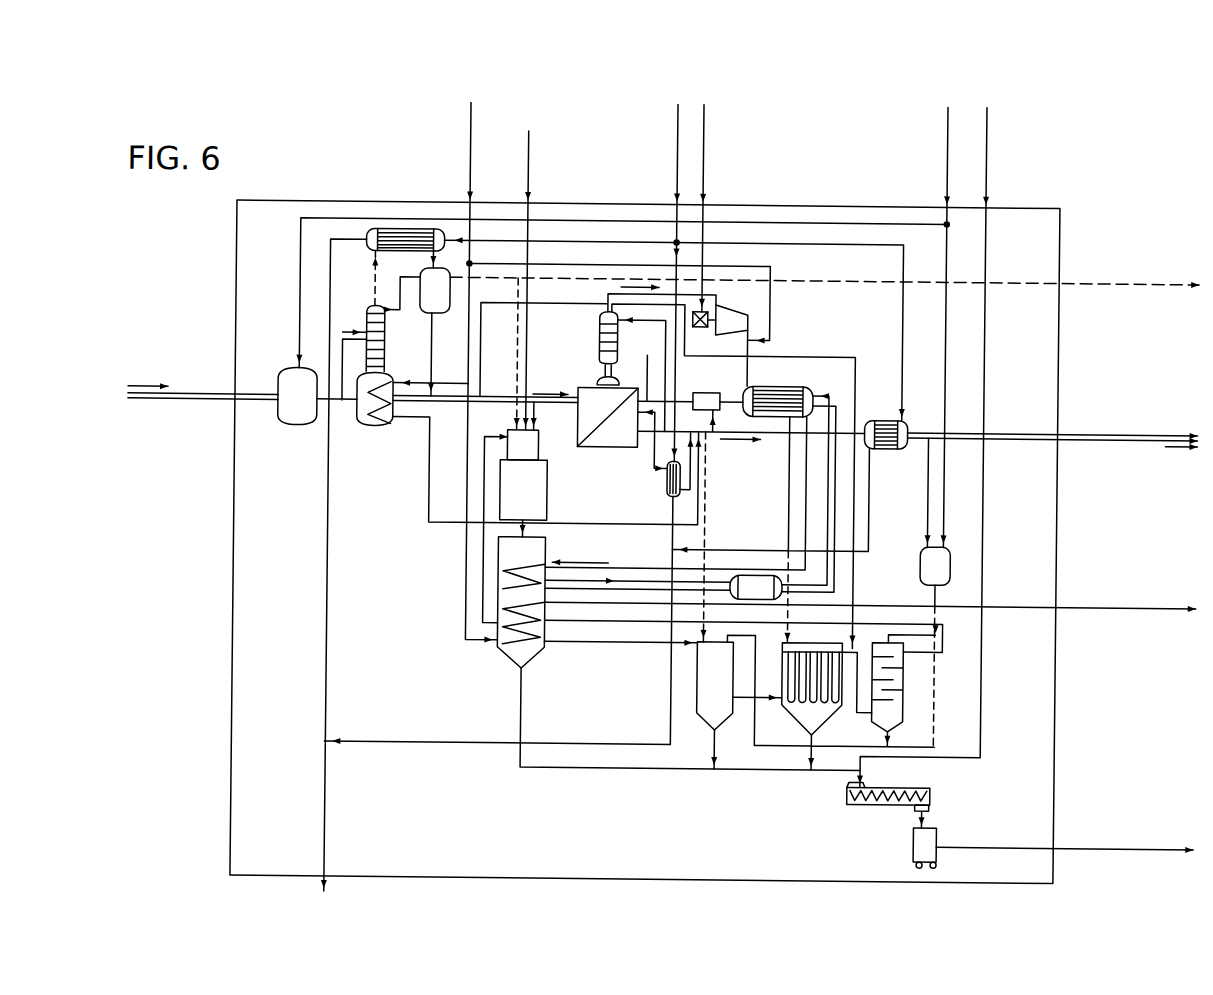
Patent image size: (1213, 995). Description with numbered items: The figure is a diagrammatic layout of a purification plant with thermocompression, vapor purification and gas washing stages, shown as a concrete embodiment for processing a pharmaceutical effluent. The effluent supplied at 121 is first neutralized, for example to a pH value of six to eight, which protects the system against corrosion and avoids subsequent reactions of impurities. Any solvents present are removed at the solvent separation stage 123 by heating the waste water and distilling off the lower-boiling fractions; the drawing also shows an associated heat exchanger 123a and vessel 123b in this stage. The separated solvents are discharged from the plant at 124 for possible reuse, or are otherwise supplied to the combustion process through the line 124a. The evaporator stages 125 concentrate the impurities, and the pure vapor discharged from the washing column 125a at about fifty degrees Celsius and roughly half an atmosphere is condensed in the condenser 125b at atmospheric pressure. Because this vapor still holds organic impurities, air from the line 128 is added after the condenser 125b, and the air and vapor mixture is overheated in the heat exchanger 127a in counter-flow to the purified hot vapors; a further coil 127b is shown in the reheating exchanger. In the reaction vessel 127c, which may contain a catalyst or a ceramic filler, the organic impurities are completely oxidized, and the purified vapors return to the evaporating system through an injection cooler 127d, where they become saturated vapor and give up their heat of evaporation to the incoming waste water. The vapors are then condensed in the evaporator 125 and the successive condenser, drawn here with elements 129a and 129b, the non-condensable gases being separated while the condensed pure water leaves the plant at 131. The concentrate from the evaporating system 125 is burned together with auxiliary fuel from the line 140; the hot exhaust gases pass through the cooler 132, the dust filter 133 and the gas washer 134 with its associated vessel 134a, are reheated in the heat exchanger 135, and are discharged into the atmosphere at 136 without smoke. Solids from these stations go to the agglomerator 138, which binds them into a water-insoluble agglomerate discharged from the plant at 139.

The effluent supply 121 is at (297, 425).
The solvent separation stage 123 is at (380, 425).
The heat exchanger 123a is at (404, 227).
The separator vessel 123b is at (428, 308).
The solvent discharge 124 is at (1093, 278).
The solvent line to combustion 124a is at (519, 345).
The evaporator stages 125 is at (610, 444).
The washing column 125a is at (601, 358).
The condenser 125b is at (749, 320).
The heat exchanger 127a is at (758, 412).
The heating coil 127b is at (532, 563).
The reaction vessel 127c is at (752, 570).
The injection cooler 127d is at (718, 381).
The air line 128 is at (470, 152).
The filter 129a is at (669, 488).
The heat exchanger 129b is at (900, 443).
The pure water outlet 131 is at (1100, 433).
The cooler 132 is at (702, 698).
The dust filter 133 is at (803, 722).
The gas washer 134 is at (884, 716).
The liquid vessel 134a is at (925, 566).
The heat exchanger 135 is at (502, 608).
The atmosphere discharge 136 is at (1095, 602).
The agglomerator 138 is at (866, 799).
The solids discharge 139 is at (1088, 842).
The auxiliary fuel line 140 is at (528, 152).